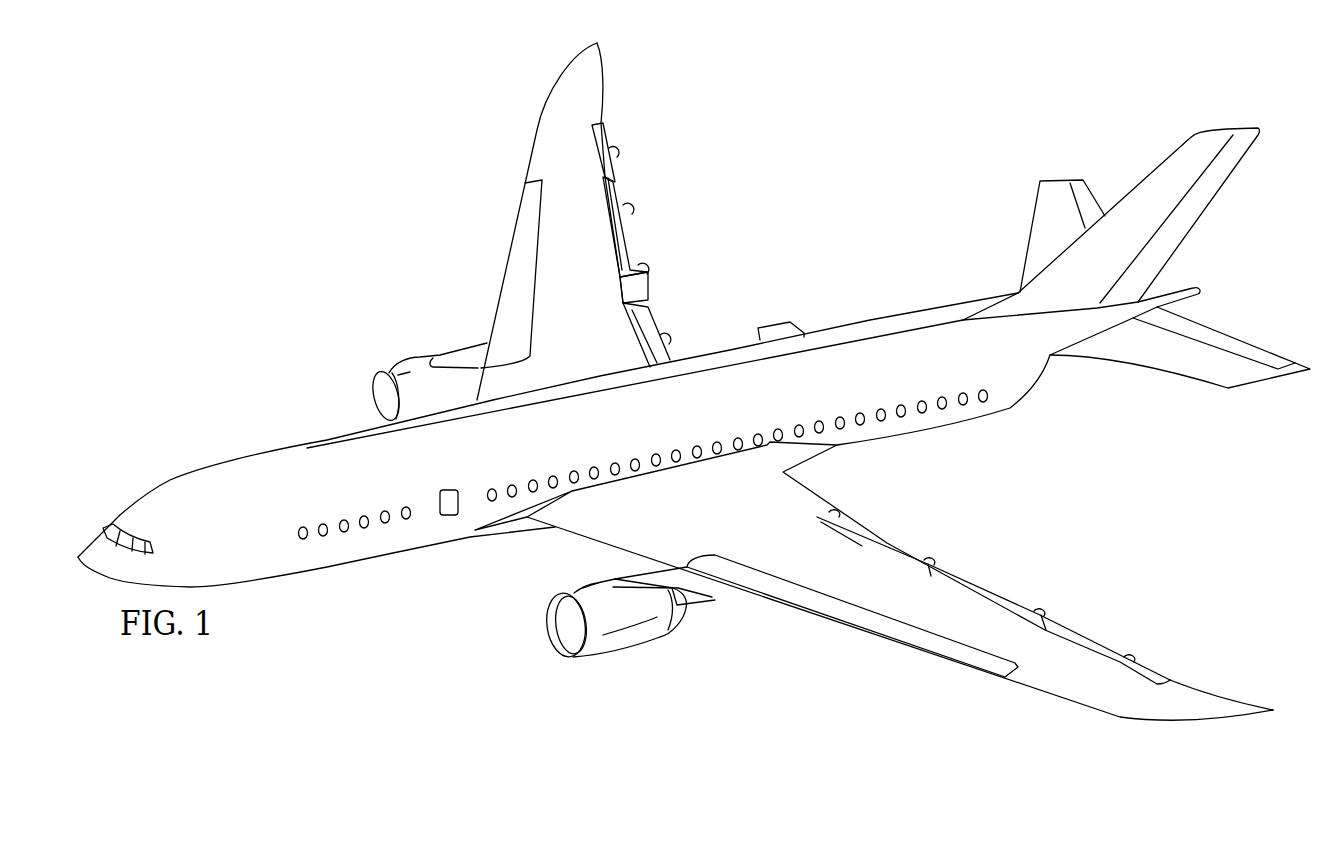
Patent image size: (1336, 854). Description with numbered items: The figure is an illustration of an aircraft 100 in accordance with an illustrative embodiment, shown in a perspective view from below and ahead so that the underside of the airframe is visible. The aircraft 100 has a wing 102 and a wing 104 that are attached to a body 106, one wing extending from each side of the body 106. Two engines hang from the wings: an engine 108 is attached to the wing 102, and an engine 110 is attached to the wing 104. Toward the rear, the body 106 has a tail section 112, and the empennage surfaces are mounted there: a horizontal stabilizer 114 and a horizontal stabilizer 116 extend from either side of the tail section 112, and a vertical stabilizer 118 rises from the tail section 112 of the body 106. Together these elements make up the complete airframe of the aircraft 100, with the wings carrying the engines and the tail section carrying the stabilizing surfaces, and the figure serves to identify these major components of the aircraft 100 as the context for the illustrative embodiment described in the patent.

The aircraft 100 is at (362, 268).
The wing 102 is at (598, 73).
The wing 104 is at (1130, 721).
The body 106 is at (243, 454).
The engine 108 is at (410, 359).
The engine 110 is at (633, 654).
The tail section 112 is at (1091, 415).
The horizontal stabilizer 114 is at (1028, 232).
The horizontal stabilizer 116 is at (1181, 377).
The vertical stabilizer 118 is at (1209, 206).